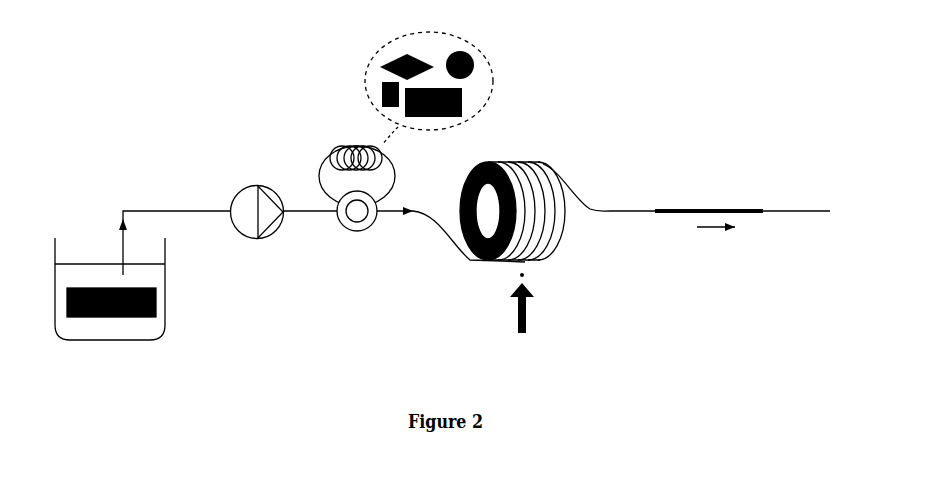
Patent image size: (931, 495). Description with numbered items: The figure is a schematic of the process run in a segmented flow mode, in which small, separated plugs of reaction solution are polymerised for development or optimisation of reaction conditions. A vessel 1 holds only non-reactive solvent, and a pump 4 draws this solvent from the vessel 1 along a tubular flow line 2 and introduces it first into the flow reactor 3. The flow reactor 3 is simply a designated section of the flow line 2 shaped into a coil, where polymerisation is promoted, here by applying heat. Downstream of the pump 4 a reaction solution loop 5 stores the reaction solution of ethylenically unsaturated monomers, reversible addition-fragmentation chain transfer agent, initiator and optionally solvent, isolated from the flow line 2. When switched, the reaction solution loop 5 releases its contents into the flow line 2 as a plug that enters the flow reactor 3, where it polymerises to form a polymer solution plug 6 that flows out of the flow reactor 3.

The vessel 1 is at (175, 310).
The flow line 2 is at (148, 203).
The flow reactor 3 is at (463, 264).
The pump 4 is at (232, 182).
The reaction solution loop 5 is at (315, 150).
The polymer solution plug 6 is at (699, 206).